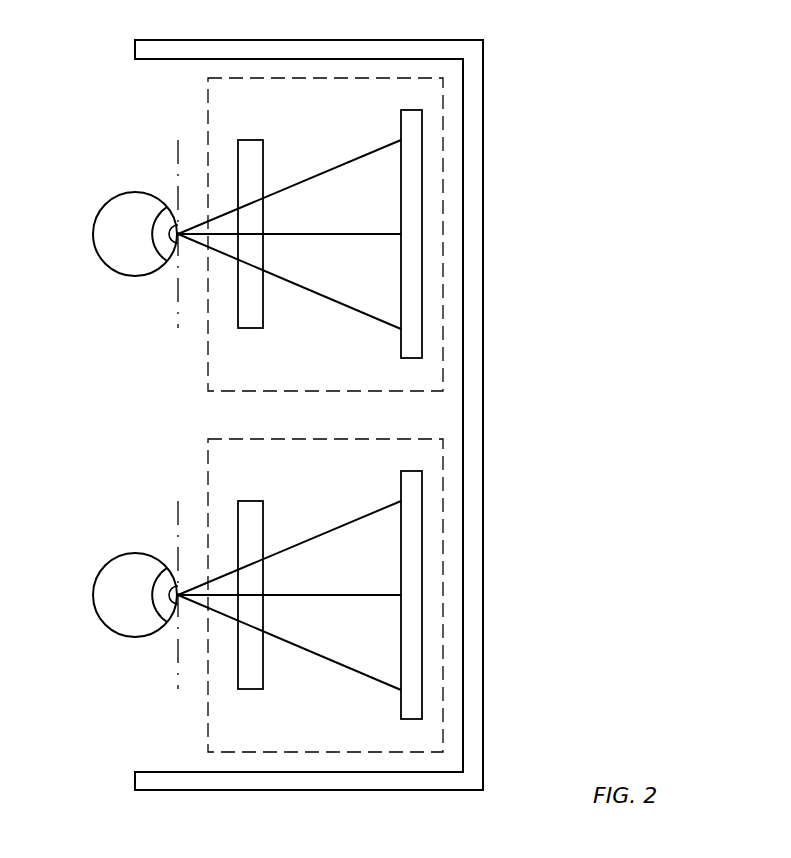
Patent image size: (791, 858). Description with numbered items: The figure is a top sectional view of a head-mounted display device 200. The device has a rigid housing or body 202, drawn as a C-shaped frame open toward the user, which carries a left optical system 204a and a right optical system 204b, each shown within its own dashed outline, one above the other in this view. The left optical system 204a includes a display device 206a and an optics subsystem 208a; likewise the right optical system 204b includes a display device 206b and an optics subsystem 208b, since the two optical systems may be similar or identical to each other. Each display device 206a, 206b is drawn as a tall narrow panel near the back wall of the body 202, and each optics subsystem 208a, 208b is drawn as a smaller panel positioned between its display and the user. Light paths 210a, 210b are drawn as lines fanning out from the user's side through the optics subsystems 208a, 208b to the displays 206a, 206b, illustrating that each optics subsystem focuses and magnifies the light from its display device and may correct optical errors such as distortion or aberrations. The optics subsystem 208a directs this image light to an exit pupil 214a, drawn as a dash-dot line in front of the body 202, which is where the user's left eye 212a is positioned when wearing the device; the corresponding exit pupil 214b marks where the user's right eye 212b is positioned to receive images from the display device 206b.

The head-mounted display device 200 is at (611, 83).
The rigid housing or body 202 is at (472, 154).
The left optical system 204a is at (307, 77).
The right optical system 204b is at (307, 438).
The display device 206a is at (410, 290).
The display device 206b is at (410, 651).
The optics subsystem 208a is at (246, 140).
The optics subsystem 208b is at (246, 501).
The first light rays / field of view 210a is at (316, 177).
The second light rays / field of view 210b is at (316, 538).
The left eye 212a is at (105, 207).
The right eye 212b is at (105, 568).
The exit pupil 214a is at (178, 152).
The exit pupil 214b is at (178, 514).